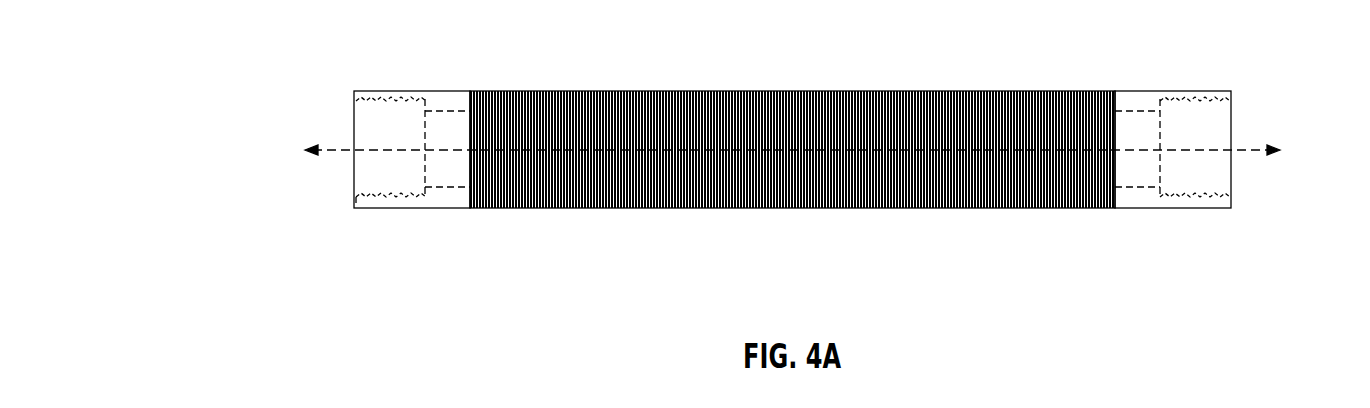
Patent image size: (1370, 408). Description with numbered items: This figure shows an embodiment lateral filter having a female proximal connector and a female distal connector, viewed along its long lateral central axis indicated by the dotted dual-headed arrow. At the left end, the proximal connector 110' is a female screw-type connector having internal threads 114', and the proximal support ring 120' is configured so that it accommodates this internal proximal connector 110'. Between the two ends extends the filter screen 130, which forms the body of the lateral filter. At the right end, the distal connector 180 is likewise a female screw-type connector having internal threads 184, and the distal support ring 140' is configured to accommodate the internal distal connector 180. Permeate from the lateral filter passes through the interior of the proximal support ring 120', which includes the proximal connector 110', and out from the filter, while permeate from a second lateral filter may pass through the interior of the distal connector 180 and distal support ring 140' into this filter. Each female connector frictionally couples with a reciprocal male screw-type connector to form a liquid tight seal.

The proximal connector 110' is at (375, 150).
The internal threads 114' is at (400, 184).
The proximal support ring 120' is at (389, 64).
The filter screen 130 is at (1186, 200).
The distal support ring 140' is at (1180, 64).
The distal connector 180 is at (1215, 165).
The internal threads 184 is at (1207, 192).